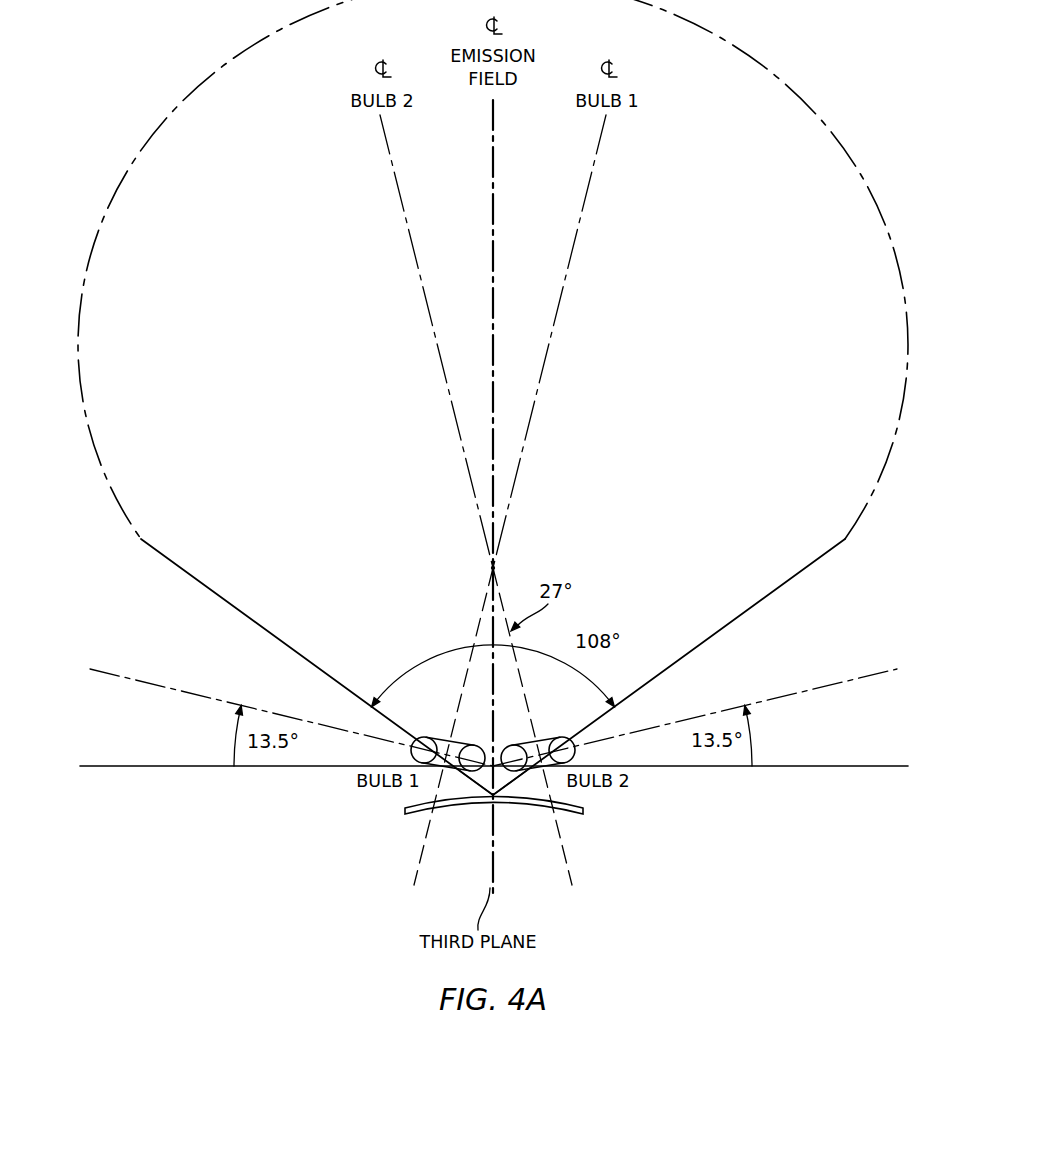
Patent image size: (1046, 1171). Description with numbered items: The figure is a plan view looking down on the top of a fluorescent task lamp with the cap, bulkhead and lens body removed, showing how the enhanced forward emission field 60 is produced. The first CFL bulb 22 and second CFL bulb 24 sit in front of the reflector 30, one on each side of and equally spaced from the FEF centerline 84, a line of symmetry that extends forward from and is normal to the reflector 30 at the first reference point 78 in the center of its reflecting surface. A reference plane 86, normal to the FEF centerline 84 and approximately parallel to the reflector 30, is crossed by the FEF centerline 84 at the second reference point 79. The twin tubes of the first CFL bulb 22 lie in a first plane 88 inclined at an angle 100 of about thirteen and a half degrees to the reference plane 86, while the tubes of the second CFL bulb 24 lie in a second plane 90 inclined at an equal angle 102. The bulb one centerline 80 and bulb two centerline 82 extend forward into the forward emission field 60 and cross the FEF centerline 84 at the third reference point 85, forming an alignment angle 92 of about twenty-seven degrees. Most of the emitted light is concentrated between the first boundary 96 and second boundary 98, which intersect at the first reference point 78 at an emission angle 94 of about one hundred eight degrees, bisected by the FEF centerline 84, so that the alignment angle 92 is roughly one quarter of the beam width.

The first CFL bulb 22 is at (440, 736).
The second CFL bulb 24 is at (548, 736).
The reflector 30 is at (402, 806).
The forward emission field 60 is at (709, 410).
The first reference point 78 is at (510, 789).
The second reference point 79 is at (486, 776).
The bulb one centerline 80 is at (578, 234).
The bulb two centerline 82 is at (412, 236).
The FEF centerline 84 is at (494, 222).
The third reference point 85 is at (498, 567).
The reference plane 86 is at (838, 767).
The first plane 88 is at (146, 682).
The second plane 90 is at (842, 683).
The alignment angle 92 is at (470, 626).
The emission angle 94 is at (428, 660).
The first boundary 96 is at (220, 596).
The second boundary 98 is at (768, 596).
The angle 100 is at (236, 744).
The angle 102 is at (752, 744).